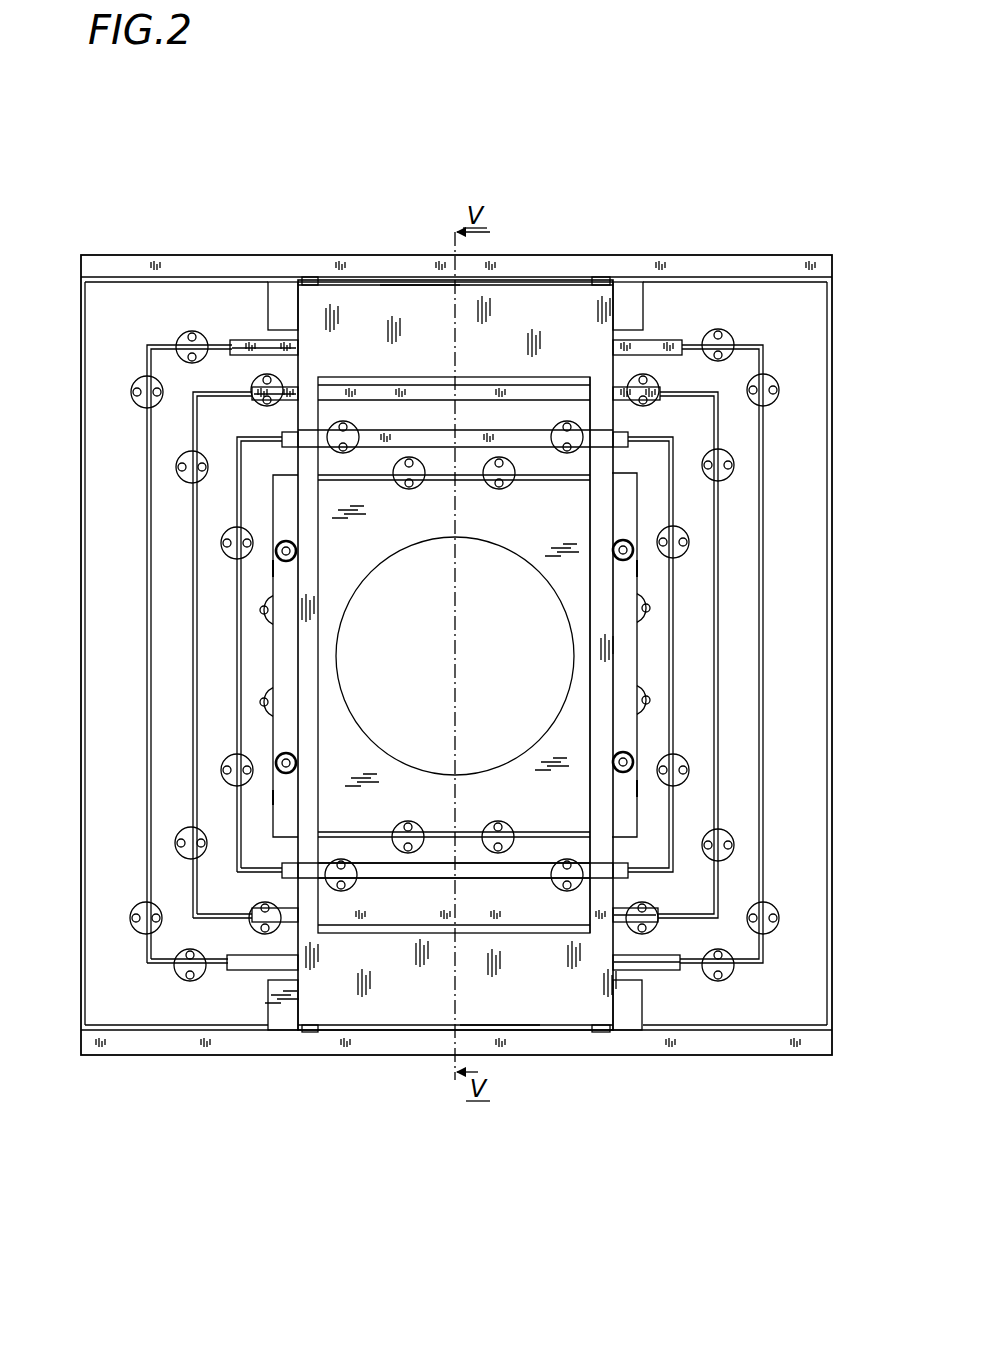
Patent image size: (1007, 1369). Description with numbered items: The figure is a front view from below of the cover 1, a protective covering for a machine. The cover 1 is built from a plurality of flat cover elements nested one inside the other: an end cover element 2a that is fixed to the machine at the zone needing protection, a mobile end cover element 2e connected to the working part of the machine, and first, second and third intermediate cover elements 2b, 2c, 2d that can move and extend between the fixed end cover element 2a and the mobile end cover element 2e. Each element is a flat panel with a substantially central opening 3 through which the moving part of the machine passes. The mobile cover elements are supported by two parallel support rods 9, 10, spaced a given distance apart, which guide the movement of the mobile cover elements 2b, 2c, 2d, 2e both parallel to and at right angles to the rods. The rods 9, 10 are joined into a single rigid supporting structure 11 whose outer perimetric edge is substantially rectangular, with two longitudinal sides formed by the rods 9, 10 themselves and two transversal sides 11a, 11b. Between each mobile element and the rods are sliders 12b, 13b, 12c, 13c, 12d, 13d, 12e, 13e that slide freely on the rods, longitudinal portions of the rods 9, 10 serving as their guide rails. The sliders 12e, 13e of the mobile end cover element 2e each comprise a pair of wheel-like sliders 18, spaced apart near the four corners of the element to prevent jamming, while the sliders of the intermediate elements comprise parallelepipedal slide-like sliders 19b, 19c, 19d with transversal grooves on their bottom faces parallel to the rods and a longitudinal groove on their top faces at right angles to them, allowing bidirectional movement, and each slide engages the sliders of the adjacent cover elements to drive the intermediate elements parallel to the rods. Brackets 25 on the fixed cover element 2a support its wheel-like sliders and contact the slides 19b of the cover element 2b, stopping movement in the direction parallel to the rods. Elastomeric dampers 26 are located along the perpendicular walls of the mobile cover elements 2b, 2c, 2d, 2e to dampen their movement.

The cover 1 is at (709, 230).
The end cover element 2a is at (78, 388).
The first intermediate cover element 2b is at (144, 497).
The second intermediate cover element 2c is at (190, 615).
The third intermediate cover element 2d is at (234, 674).
The mobile end cover element 2e is at (271, 790).
The opening 3 is at (397, 657).
The support rod 9 is at (598, 818).
The support rod 10 is at (318, 862).
The supporting structure 11 is at (423, 1002).
The transversal side 11a is at (487, 1018).
The transversal side 11b is at (426, 288).
The slider 12b is at (229, 337).
The slider 12c is at (267, 390).
The slider 12d is at (518, 428).
The slider 12e is at (277, 561).
The slider 13b is at (679, 966).
The slider 13c is at (568, 924).
The slider 13d is at (398, 876).
The slider 13e is at (633, 558).
The wheel-like slider 18 is at (277, 547).
The slide-like slider 19b is at (240, 343).
The slide-like slider 19c is at (283, 390).
The slide-like slider 19d is at (538, 436).
The bracket 25 is at (279, 288).
The elastomeric damper 26 is at (737, 337).